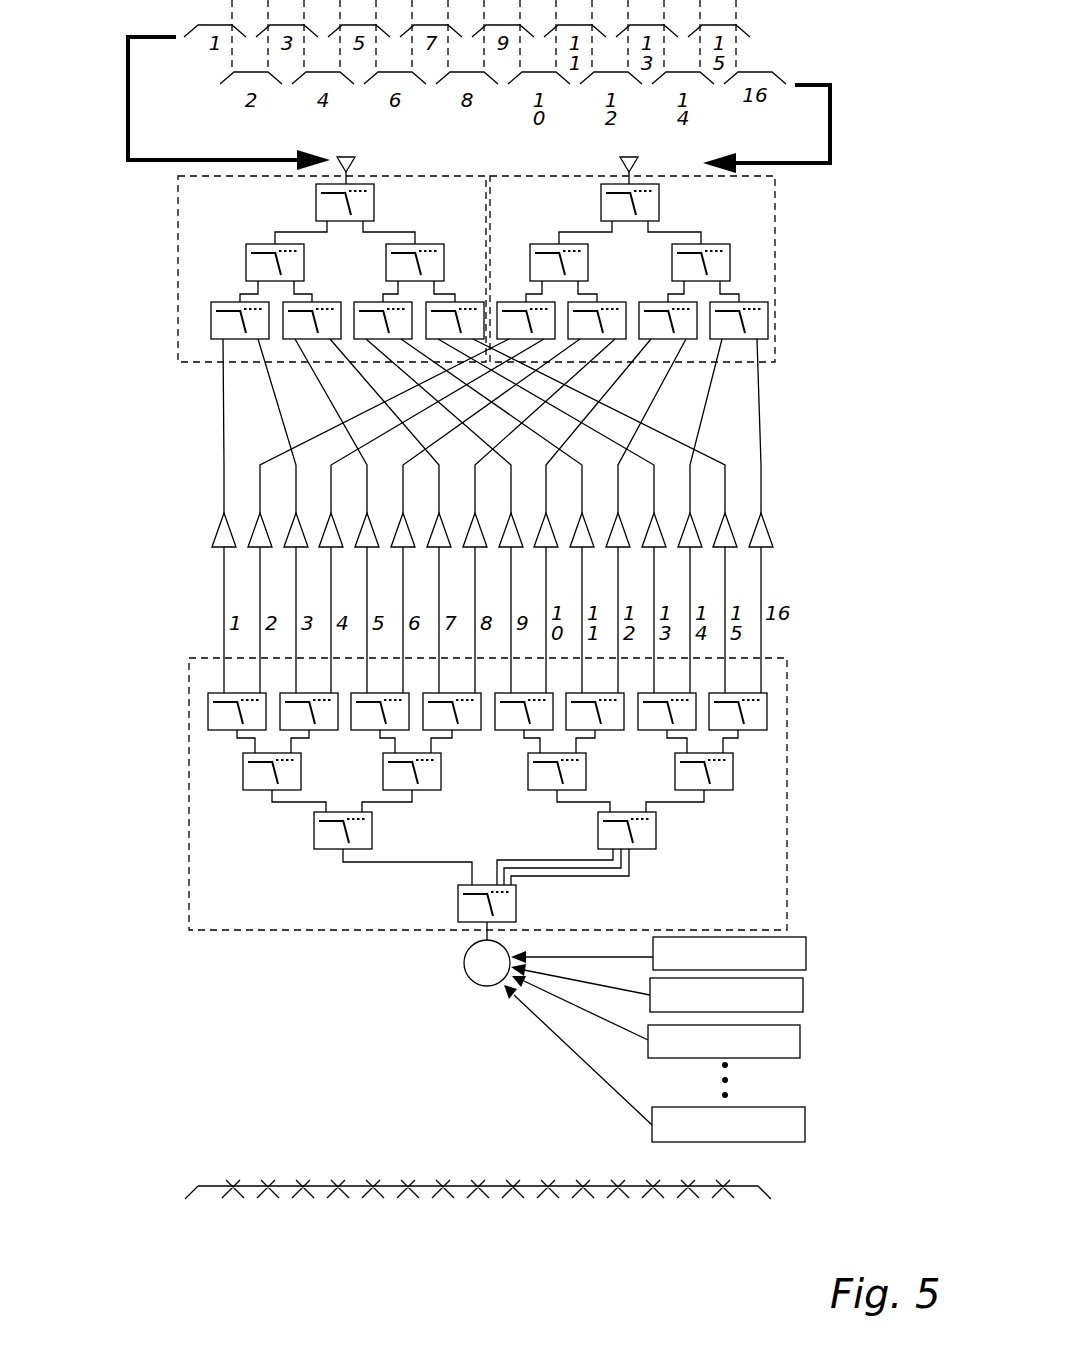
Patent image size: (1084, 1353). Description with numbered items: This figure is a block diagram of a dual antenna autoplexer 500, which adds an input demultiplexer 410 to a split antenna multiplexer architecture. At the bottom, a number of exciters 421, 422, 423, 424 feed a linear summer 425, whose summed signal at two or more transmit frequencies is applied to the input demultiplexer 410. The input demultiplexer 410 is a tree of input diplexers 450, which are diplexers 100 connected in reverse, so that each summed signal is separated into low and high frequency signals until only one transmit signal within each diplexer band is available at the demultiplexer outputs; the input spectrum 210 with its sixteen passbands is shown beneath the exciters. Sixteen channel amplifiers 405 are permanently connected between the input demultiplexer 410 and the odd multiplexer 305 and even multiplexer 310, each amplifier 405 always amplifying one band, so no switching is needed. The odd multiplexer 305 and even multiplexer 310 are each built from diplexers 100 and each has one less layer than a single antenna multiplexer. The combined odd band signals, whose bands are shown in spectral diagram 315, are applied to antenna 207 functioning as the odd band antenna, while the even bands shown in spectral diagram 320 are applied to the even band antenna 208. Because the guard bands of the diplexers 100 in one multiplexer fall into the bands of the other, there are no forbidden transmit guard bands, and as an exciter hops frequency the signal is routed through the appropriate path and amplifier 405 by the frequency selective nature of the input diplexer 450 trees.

The diplexer 100 is at (213, 302).
The antenna 207 is at (355, 163).
The even band antenna 208 is at (640, 163).
The input spectrum 210 is at (245, 1170).
The odd multiplexer 305 is at (178, 246).
The even multiplexer 310 is at (775, 255).
The spectral diagram 315 is at (135, 29).
The spectral diagram 320 is at (822, 66).
The channel amplifier 405 is at (808, 530).
The input demultiplexer 410 is at (787, 720).
The exciter 421 is at (806, 945).
The exciter 422 is at (803, 985).
The exciter 423 is at (800, 1035).
The exciter 424 is at (805, 1115).
The linear summer 425 is at (467, 977).
The input diplexer 450 is at (258, 808).
The dual antenna autoplexer 500 is at (168, 681).